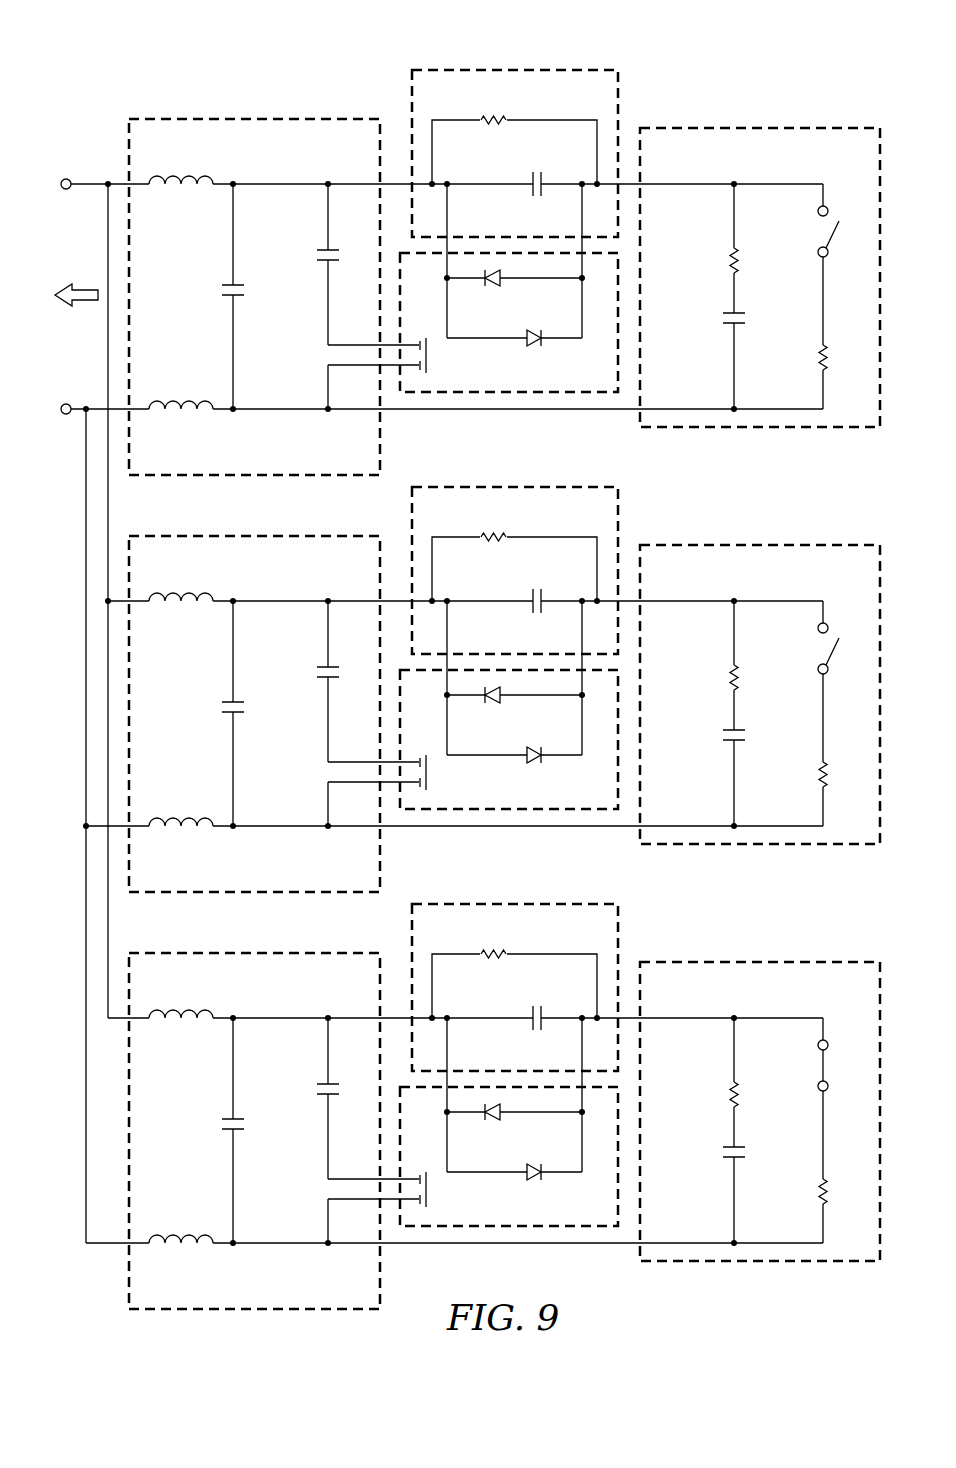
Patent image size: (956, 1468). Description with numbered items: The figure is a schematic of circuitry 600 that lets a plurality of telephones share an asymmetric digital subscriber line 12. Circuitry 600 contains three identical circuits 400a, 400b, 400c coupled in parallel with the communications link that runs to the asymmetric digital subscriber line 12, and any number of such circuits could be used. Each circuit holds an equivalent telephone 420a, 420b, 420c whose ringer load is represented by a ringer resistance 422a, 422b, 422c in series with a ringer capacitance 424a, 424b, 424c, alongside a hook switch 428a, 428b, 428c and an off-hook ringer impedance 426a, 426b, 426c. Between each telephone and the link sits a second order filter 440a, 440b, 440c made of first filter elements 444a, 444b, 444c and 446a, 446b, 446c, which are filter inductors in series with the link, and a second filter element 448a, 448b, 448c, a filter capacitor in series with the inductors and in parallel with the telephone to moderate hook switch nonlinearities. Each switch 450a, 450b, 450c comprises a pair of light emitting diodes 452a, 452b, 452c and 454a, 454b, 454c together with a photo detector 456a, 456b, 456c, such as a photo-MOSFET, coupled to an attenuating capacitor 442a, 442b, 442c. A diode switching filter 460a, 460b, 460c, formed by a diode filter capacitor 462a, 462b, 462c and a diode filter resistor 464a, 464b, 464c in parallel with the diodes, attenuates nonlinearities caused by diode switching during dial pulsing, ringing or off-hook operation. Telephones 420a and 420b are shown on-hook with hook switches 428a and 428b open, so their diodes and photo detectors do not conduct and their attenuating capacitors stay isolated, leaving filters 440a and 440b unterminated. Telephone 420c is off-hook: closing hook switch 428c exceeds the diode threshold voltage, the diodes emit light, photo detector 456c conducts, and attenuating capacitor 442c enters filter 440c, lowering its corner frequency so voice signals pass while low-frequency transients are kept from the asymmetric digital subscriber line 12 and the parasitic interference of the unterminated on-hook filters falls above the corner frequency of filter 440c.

The circuitry 600 is at (216, 66).
The asymmetric digital subscriber line 12 is at (63, 291).
The circuit 400a is at (836, 110).
The circuit 400b is at (761, 660).
The circuit 400c is at (760, 1077).
The telephone 420a is at (787, 167).
The telephone 420b is at (778, 693).
The telephone 420c is at (778, 1110).
The ringer resistance 422a is at (728, 258).
The ringer resistance 422b is at (710, 674).
The ringer resistance 422c is at (710, 1091).
The ringer capacitance 424a is at (722, 318).
The ringer capacitance 424b is at (713, 743).
The ringer capacitance 424c is at (713, 1160).
The off-hook ringer impedance 426a is at (818, 356).
The off-hook ringer impedance 426b is at (808, 785).
The off-hook ringer impedance 426c is at (808, 1202).
The hook switch 428a is at (820, 232).
The hook switch 428b is at (792, 648).
The hook switch 428c is at (786, 1065).
The filter 440a is at (300, 457).
The filter 440b is at (254, 714).
The filter 440c is at (254, 1131).
The attenuating capacitor 442a is at (317, 255).
The attenuating capacitor 442b is at (300, 666).
The attenuating capacitor 442c is at (300, 1083).
The first filter element 444a is at (190, 190).
The first filter element 444b is at (180, 607).
The first filter element 444c is at (180, 1024).
The first filter element 446a is at (190, 415).
The first filter element 446b is at (180, 832).
The first filter element 446c is at (180, 1249).
The second filter element 448a is at (222, 292).
The second filter element 448b is at (208, 716).
The second filter element 448c is at (208, 1133).
The switch 450a is at (598, 377).
The switch 450b is at (509, 739).
The switch 450c is at (509, 1156).
The light emitting diode 452a is at (492, 285).
The light emitting diode 452b is at (482, 718).
The light emitting diode 452c is at (481, 1135).
The light emitting diode 454a is at (533, 330).
The light emitting diode 454b is at (552, 734).
The light emitting diode 454c is at (551, 1151).
The photo detector 456a is at (432, 355).
The photo detector 456b is at (419, 776).
The photo detector 456c is at (418, 1193).
The diode switching filter 460a is at (620, 95).
The diode switching filter 460b is at (556, 570).
The diode switching filter 460c is at (555, 987).
The diode filter capacitor 462a is at (537, 170).
The diode filter capacitor 462b is at (550, 592).
The diode filter capacitor 462c is at (549, 1009).
The diode filter resistor 464a is at (490, 126).
The diode filter resistor 464b is at (480, 545).
The diode filter resistor 464c is at (480, 962).